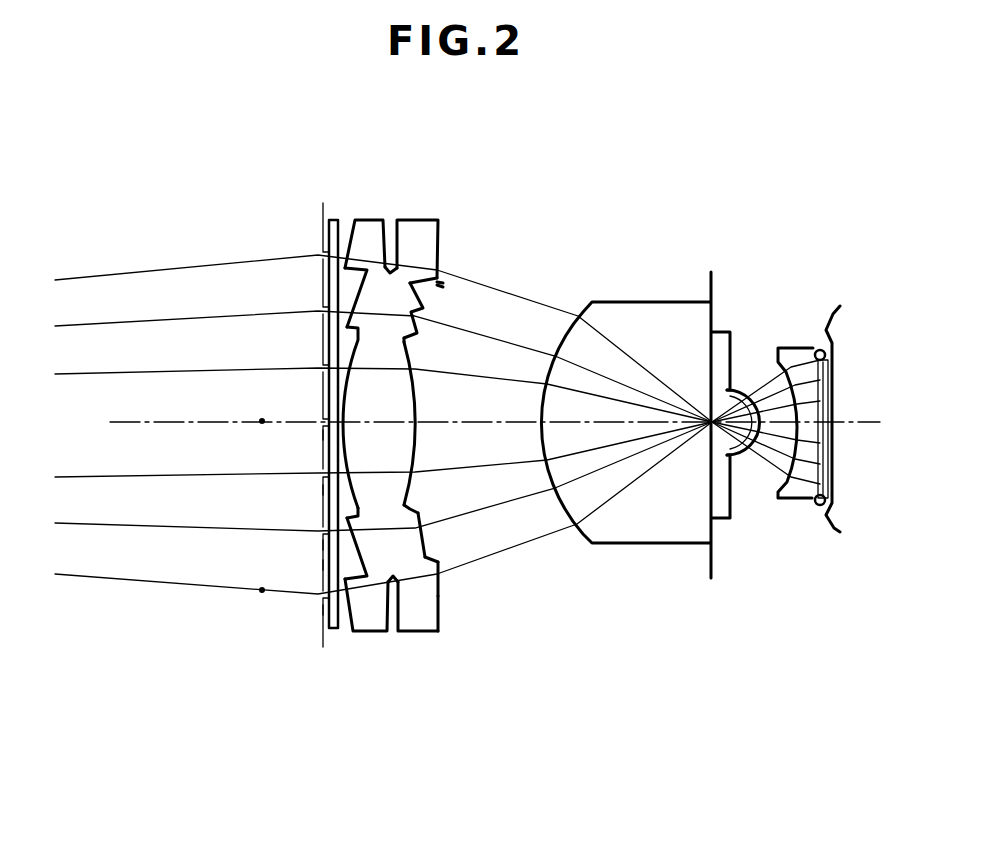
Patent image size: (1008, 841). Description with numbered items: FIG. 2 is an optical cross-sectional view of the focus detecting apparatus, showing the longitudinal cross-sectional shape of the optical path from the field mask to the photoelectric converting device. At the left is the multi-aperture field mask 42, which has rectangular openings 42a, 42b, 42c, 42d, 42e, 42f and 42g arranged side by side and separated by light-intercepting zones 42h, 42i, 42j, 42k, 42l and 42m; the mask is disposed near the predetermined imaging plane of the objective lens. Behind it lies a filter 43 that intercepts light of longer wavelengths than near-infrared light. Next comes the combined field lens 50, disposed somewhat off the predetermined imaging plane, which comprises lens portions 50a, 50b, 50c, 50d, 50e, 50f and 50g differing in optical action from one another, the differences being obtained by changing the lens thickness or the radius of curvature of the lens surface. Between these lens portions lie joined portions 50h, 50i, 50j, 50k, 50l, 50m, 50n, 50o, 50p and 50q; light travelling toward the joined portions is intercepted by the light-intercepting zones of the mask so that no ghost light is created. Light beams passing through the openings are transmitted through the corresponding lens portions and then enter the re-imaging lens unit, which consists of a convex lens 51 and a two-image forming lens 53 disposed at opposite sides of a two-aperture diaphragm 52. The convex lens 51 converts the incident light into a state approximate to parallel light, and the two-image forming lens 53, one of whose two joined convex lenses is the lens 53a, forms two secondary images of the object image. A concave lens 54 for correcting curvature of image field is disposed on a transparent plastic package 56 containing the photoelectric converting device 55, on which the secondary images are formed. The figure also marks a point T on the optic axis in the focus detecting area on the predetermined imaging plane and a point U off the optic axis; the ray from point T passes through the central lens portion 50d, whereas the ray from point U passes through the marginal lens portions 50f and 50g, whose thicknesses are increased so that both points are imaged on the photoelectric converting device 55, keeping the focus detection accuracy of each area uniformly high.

The multi-aperture field mask 42 is at (232, 441).
The opening 42a is at (321, 247).
The opening 42b is at (322, 308).
The opening 42c is at (322, 362).
The opening 42d is at (322, 415).
The opening 42e is at (322, 475).
The opening 42f is at (322, 528).
The opening 42g is at (322, 597).
The light-intercepting zone 42h is at (322, 284).
The light-intercepting zone 42i is at (322, 333).
The light-intercepting zone 42j is at (322, 389).
The light-intercepting zone 42k is at (322, 446).
The light-intercepting zone 42l is at (322, 500).
The light-intercepting zone 42m is at (322, 565).
The filter 43 is at (333, 629).
The combined field lens 50 is at (391, 438).
The lens portion 50a is at (355, 220).
The lens portion 50b is at (399, 220).
The lens portion 50c is at (420, 298).
The central lens portion 50d is at (415, 430).
The lens portion 50e is at (432, 558).
The marginal lens portion 50f is at (365, 632).
The marginal lens portion 50g is at (434, 632).
The joined portion 50h is at (424, 278).
The joined portion 50i is at (445, 290).
The joined portion 50j is at (445, 285).
The joined portion 50k is at (355, 333).
The joined portion 50l is at (417, 340).
The joined portion 50m is at (405, 486).
The joined portion 50n is at (425, 508).
The joined portion 50o is at (379, 548).
The joined portion 50p is at (439, 592).
The joined portion 50q is at (440, 603).
The convex lens 51 is at (606, 543).
The two-aperture diaphragm 52 is at (711, 571).
The two-image forming lens 53 is at (751, 443).
The convex lens 53a is at (745, 390).
The concave lens 54 is at (797, 498).
The photoelectric converting device 55 is at (820, 372).
The transparent plastic package 56 is at (835, 489).
The point on the optic axis T is at (259, 421).
The point off the optic axis U is at (260, 591).